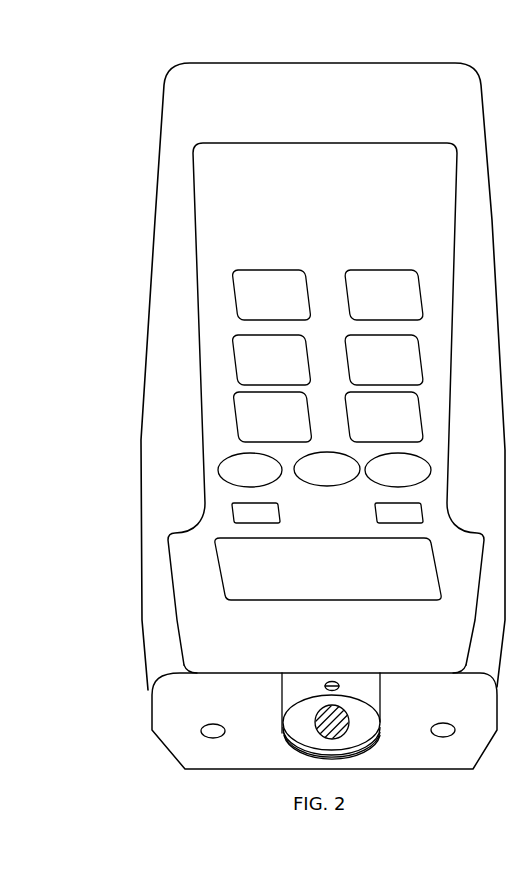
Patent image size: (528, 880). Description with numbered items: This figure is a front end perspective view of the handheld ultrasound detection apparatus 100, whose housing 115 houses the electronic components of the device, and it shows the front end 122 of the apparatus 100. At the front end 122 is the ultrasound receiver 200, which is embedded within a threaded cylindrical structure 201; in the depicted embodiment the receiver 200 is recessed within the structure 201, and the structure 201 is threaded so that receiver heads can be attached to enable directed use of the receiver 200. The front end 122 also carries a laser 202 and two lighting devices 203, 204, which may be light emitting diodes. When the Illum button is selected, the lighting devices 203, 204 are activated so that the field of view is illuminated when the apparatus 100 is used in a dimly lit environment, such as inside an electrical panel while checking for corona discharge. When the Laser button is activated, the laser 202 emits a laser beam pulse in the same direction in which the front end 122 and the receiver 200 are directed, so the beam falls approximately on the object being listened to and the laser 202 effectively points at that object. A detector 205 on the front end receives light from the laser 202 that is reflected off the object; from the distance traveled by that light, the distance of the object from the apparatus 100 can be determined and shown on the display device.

The handheld ultrasound detection apparatus 100 is at (155, 50).
The housing 115 is at (407, 62).
The front end 122 is at (271, 763).
The ultrasound receiver 200 is at (340, 714).
The threaded cylindrical structure 201 is at (374, 740).
The laser 202 is at (326, 685).
The lighting device 203 is at (204, 733).
The lighting device 204 is at (457, 722).
The detector 205 is at (338, 683).